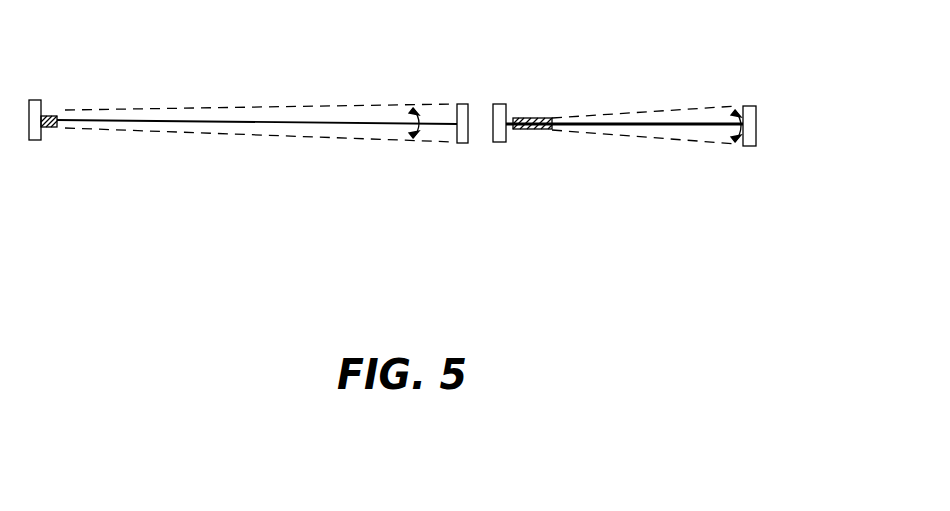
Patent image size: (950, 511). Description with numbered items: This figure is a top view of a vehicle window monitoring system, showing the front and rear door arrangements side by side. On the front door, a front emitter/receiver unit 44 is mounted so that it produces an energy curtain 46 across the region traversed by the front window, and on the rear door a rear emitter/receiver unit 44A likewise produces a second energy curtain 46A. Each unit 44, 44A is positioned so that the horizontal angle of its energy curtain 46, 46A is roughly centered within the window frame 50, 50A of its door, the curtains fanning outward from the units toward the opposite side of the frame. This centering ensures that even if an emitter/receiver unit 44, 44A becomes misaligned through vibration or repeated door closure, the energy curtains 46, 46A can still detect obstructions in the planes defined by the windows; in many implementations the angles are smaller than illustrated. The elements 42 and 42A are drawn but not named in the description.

The window frame 50 is at (36, 100).
The front emitter/receiver unit 44 is at (48, 128).
The cantilever beam / fiber 42 is at (140, 123).
The energy curtain 46 is at (287, 138).
The window frame 50A is at (498, 104).
The rear emitter/receiver unit 44A is at (525, 130).
The thicker cantilever beam / fiber 42A is at (600, 127).
The second energy curtain 46A is at (690, 143).